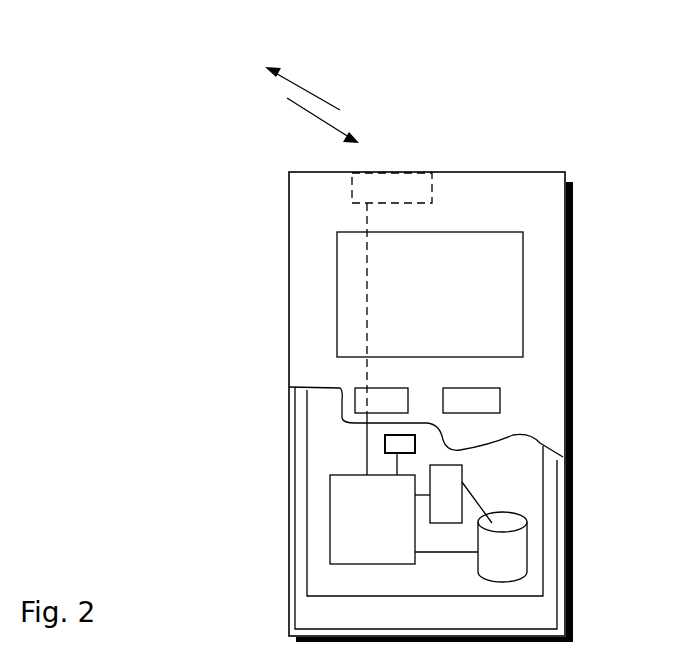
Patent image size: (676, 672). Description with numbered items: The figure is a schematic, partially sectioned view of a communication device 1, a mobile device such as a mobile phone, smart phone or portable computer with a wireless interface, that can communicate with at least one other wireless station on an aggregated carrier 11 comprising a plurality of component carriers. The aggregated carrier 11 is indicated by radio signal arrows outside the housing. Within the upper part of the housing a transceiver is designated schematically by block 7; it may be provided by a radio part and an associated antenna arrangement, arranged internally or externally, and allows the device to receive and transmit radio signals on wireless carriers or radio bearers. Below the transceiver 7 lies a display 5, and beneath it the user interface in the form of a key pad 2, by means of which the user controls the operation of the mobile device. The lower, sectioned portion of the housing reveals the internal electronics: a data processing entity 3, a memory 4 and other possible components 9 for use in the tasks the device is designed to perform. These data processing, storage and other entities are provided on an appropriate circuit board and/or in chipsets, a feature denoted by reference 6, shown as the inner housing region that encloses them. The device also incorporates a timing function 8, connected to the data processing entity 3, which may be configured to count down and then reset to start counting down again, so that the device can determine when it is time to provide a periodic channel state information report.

The communication device 1 is at (290, 210).
The key pad 2 is at (357, 402).
The data processing entity 3 is at (337, 503).
The memory 4 is at (497, 557).
The display 5 is at (352, 283).
The circuit board 6 is at (330, 580).
The transceiver 7 is at (377, 188).
The timing function 8 is at (400, 455).
The other possible components 9 is at (447, 485).
The aggregated carrier 11 is at (300, 76).